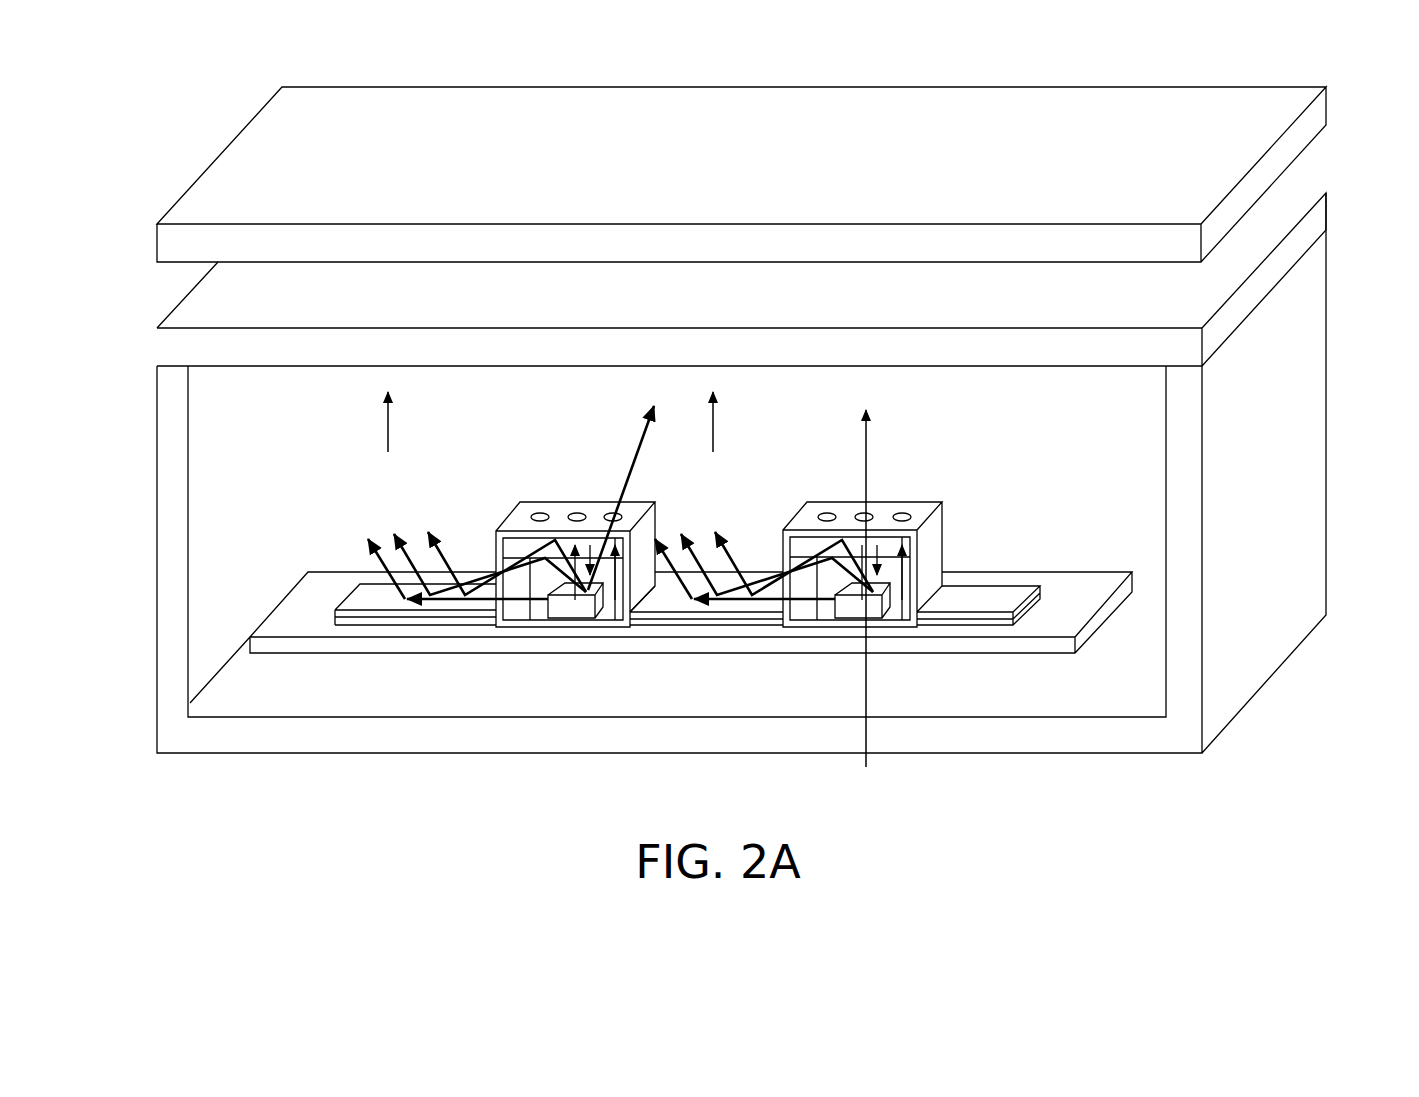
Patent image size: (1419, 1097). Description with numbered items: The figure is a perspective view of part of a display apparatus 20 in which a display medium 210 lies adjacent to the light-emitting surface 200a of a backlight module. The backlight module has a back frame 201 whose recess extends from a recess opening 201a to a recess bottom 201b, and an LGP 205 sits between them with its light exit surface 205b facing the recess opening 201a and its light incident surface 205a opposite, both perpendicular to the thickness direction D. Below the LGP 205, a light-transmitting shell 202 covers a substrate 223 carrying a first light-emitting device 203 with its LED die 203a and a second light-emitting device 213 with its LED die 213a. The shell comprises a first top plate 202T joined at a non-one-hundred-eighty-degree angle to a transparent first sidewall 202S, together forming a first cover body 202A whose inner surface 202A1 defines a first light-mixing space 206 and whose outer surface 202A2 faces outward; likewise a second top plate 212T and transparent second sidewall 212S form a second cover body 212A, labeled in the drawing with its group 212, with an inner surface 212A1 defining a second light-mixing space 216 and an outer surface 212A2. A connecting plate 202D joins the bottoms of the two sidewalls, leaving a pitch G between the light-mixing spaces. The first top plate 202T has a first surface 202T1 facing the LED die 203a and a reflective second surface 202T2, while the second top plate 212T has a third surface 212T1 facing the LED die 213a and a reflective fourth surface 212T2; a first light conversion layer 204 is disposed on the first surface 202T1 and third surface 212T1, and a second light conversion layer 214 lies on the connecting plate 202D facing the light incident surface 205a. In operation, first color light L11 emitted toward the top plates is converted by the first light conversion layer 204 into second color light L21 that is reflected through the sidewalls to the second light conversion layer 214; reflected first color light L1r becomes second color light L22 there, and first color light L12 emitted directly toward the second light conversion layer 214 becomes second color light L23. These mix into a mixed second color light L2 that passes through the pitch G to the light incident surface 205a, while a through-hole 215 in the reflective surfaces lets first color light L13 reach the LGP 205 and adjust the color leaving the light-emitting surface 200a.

The display apparatus 20 is at (72, 48).
The back frame 201 is at (1165, 735).
The recess opening 201a is at (1170, 361).
The recess bottom 201b is at (1082, 716).
The light-transmitting shell 202 is at (88, 363).
The first cover body 202A is at (1327, 667).
The inner surface of the first cover body 202A1 is at (809, 519).
The outer surface of the first cover body 202A2 is at (793, 455).
The first top plate 202T is at (887, 483).
The first surface 202T1 is at (886, 612).
The second surface 202T2 is at (923, 510).
The first sidewall 202S is at (960, 530).
The connecting plate 202D is at (753, 768).
The first light-emitting device 203 is at (88, 105).
The LED die 203a is at (895, 686).
The first light conversion layer 204 is at (527, 504).
The LGP 205 is at (1011, 306).
The light incident surface 205a is at (1131, 374).
The light exit surface 205b is at (1276, 215).
The first light-mixing space 206 is at (909, 572).
The display medium 210 is at (1041, 151).
The light-emitting surface 200a is at (1308, 160).
The light guide 212 is at (88, 274).
The second top plate 212T is at (560, 507).
The third surface 212T1 is at (630, 605).
The fourth surface 212T2 is at (513, 516).
The second sidewall 212S is at (508, 535).
The second cover body 212A is at (1327, 752).
The inner surface of the second cover body 212A1 is at (622, 621).
The outer surface of the second cover body 212A2 is at (598, 467).
The second light-emitting device 213 is at (88, 188).
The LED die 213a is at (592, 682).
The second light conversion layer 214 is at (377, 617).
The through-hole 215 is at (625, 513).
The second light-mixing space 216 is at (610, 503).
The substrate 223 is at (998, 775).
The thickness direction D is at (1353, 225).
The pitch G is at (630, 306).
The first color light L11 is at (553, 603).
The first color light L12 is at (474, 603).
The first color light L13 is at (732, 574).
The first color light L1r is at (513, 603).
The mixed second color light L2 is at (388, 420).
The second color light L21 is at (457, 525).
The second color light L22 is at (420, 522).
The second color light L23 is at (372, 525).